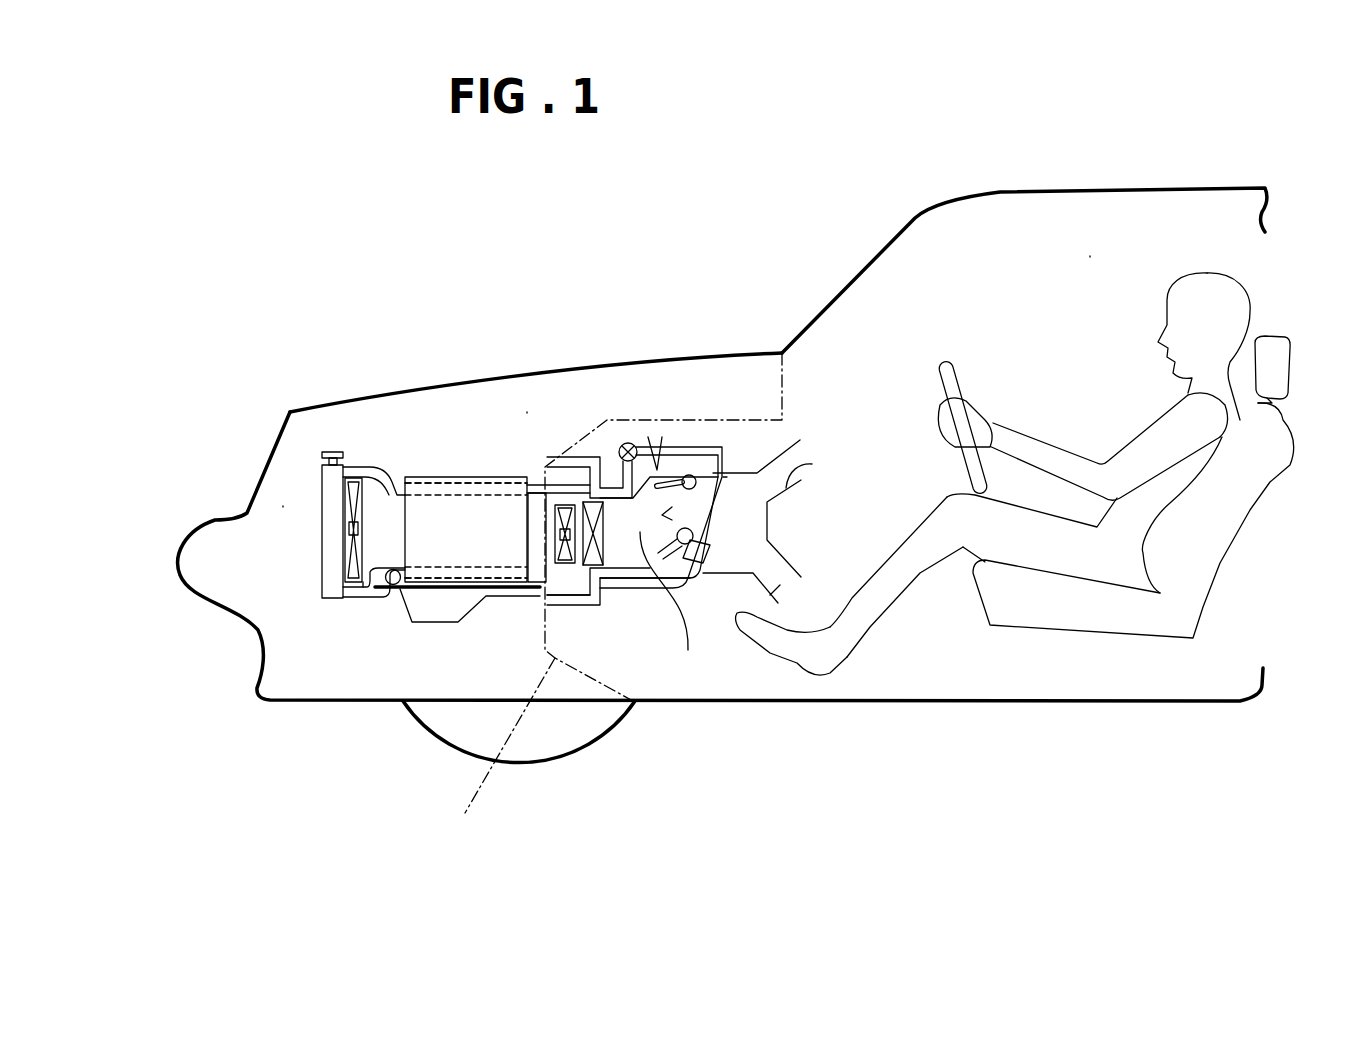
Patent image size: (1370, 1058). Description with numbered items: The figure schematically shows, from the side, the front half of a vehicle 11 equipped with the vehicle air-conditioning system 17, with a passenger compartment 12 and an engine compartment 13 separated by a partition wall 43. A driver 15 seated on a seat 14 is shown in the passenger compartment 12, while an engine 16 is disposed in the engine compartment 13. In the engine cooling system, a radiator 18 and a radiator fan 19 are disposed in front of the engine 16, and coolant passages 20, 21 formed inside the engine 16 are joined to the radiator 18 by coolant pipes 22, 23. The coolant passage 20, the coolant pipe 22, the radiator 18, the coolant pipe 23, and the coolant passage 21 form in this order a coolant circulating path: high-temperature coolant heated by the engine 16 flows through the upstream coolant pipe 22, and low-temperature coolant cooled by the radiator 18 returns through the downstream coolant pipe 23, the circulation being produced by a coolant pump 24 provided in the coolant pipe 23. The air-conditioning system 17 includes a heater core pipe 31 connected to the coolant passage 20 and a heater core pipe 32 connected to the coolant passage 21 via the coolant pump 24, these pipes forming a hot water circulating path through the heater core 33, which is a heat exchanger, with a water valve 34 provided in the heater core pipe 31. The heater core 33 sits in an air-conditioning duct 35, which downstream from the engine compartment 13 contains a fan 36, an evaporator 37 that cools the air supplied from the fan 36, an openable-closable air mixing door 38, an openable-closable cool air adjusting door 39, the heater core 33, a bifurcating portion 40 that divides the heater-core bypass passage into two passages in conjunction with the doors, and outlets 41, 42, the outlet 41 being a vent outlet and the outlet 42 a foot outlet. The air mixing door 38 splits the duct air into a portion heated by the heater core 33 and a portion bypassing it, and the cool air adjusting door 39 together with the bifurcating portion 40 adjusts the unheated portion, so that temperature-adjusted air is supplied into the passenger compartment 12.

The vehicle 11 is at (868, 235).
The passenger compartment 12 is at (1092, 256).
The engine compartment 13 is at (283, 506).
The seat 14 is at (1230, 503).
The driver 15 is at (1162, 433).
The engine 16 is at (465, 477).
The air-conditioning system 17 is at (527, 412).
The radiator 18 is at (332, 600).
The radiator fan 19 is at (385, 530).
The coolant passage 20 is at (435, 495).
The coolant passage 21 is at (497, 567).
The coolant pipe 22 is at (357, 505).
The coolant pipe 23 is at (363, 598).
The coolant pump 24 is at (393, 585).
The heater core pipe 31 is at (722, 475).
The heater core pipe 32 is at (565, 607).
The heater core 33 is at (717, 553).
The water valve 34 is at (621, 446).
The air-conditioning duct 35 is at (657, 470).
The fan 36 is at (573, 568).
The evaporator 37 is at (632, 570).
The air mixing door 38 is at (727, 477).
The cool air adjusting door 39 is at (668, 467).
The bifurcating portion 40 is at (674, 596).
The outlet 41 is at (812, 464).
The outlet 42 is at (773, 595).
The partition wall 43 is at (497, 756).